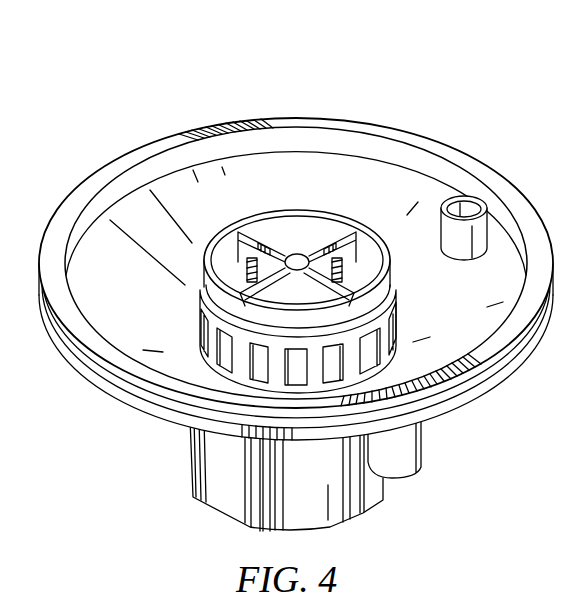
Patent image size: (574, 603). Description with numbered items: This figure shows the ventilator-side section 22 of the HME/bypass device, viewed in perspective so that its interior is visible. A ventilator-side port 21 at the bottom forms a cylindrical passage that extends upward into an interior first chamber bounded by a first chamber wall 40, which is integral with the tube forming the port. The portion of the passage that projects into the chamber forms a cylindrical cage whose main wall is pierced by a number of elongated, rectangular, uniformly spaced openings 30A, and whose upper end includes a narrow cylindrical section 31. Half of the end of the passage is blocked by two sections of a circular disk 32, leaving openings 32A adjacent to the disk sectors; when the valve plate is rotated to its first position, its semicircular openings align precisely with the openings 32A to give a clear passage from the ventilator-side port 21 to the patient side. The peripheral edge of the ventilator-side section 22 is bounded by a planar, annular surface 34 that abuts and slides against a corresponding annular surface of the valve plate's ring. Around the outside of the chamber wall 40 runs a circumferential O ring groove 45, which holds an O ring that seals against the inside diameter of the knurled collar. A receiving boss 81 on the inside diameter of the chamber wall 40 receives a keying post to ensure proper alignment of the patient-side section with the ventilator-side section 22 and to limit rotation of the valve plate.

The ventilator-side section 22 is at (176, 88).
The planar annular surface 34 is at (427, 140).
The receiving boss 81 is at (477, 205).
The first chamber wall 40 is at (97, 264).
The openings 32A is at (233, 257).
The circular disk sections 32 is at (270, 232).
The narrow cylindrical section 31 is at (295, 281).
The openings 30A is at (213, 365).
The O ring groove 45 is at (493, 360).
The ventilator-side port 21 is at (222, 500).